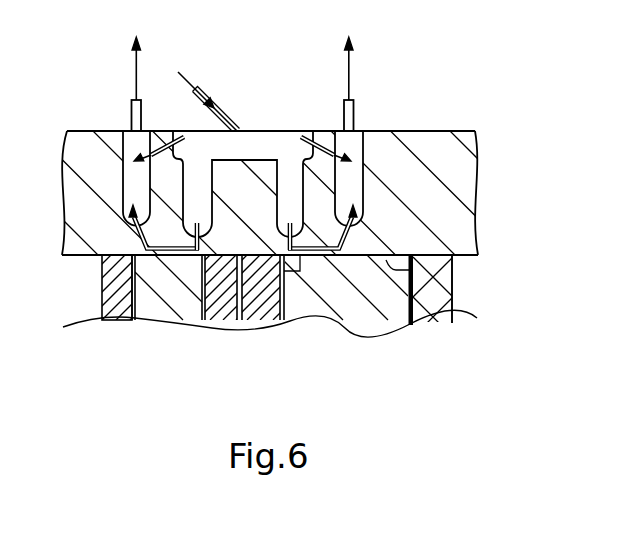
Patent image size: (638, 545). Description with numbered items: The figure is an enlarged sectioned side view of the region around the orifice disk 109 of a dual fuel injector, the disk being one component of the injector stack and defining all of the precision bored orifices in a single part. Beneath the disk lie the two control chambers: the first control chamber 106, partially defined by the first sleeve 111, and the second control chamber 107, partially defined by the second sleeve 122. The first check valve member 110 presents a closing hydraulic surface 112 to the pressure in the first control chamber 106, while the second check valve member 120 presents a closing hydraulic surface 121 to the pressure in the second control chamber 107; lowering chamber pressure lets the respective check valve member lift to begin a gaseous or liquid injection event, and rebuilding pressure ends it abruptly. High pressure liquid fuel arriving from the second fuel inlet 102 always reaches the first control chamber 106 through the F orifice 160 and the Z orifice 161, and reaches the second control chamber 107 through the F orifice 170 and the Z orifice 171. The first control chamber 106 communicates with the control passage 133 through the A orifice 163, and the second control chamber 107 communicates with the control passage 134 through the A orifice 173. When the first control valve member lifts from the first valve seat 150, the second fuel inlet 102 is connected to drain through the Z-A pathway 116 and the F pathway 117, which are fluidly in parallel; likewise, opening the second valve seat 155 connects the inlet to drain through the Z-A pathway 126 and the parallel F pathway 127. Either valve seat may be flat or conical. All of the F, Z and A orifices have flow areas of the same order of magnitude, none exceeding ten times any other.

The second fuel inlet 102 is at (182, 76).
The first control chamber 106 is at (287, 275).
The second control chamber 107 is at (204, 290).
The orifice disk 109 is at (460, 132).
The first check valve member 110 is at (360, 318).
The first sleeve 111 is at (457, 315).
The closing hydraulic surface 112 is at (452, 287).
The Z-A pathway 116 is at (357, 232).
The F pathway 117 is at (373, 120).
The second check valve member 120 is at (150, 312).
The closing hydraulic surface 121 is at (136, 258).
The second sleeve 122 is at (104, 308).
The Z-A pathway 126 is at (129, 228).
The F pathway 127 is at (140, 133).
The control passage 133 is at (354, 102).
The control passage 134 is at (131, 102).
The first valve seat 150 is at (349, 66).
The second valve seat 155 is at (136, 63).
The F orifice 160 is at (325, 133).
The Z orifice 161 is at (281, 232).
The A orifice 163 is at (349, 241).
The F orifice 170 is at (165, 131).
The Z orifice 171 is at (201, 248).
The A orifice 173 is at (140, 241).